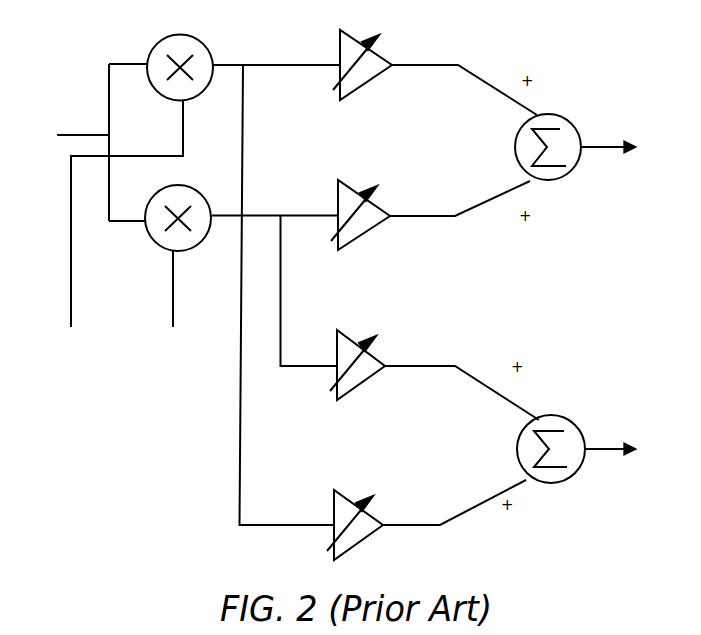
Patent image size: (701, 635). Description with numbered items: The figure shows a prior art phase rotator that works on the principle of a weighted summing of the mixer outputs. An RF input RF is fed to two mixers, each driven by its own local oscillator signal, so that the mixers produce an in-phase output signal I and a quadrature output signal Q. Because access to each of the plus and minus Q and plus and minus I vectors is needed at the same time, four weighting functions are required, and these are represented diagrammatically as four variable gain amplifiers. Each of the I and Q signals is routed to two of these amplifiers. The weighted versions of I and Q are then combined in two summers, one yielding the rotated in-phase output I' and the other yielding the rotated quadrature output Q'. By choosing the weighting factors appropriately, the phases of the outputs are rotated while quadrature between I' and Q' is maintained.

The RF input signal RF is at (87, 142).
The I output signal I is at (276, 275).
The Q output signal Q is at (275, 275).
The rotated in-phase output I' is at (575, 141).
The rotated quadrature output Q' is at (576, 444).